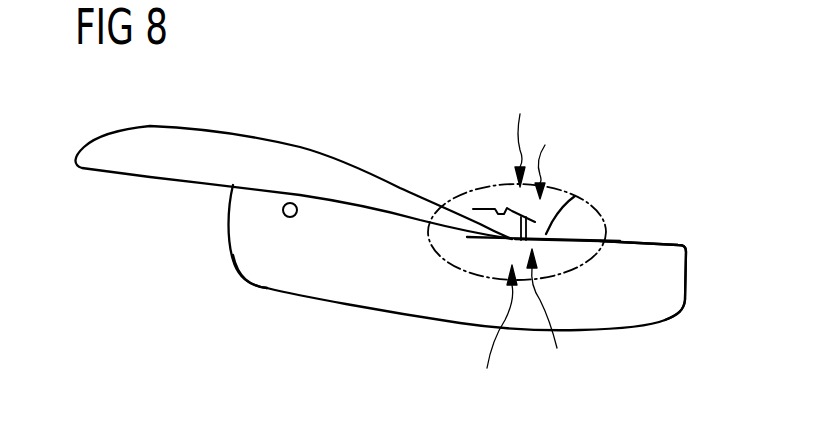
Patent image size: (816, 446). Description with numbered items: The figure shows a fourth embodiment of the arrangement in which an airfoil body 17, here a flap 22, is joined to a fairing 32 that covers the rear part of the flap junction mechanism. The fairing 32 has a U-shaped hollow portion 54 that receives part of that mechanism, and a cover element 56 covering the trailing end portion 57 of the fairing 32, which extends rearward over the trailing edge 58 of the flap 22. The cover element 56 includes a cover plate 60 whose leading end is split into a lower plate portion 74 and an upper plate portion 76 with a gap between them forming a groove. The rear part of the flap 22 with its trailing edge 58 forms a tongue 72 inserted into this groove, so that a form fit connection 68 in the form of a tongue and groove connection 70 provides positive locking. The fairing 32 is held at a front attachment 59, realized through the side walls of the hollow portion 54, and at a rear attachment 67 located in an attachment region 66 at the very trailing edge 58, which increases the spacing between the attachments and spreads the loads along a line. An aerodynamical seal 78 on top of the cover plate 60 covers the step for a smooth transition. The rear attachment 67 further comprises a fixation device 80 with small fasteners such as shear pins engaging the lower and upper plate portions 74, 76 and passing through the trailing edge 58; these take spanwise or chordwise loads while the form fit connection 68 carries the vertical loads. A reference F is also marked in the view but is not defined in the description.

The airfoil body 17 is at (293, 150).
The flap 22 is at (208, 128).
The fairing 32 is at (378, 297).
The hollow portion 54 is at (266, 276).
The cover element 56 is at (669, 195).
The cover plate 60 is at (667, 243).
The trailing end portion 57 is at (686, 262).
The trailing edge 58 is at (608, 204).
The tongue 72 is at (575, 196).
The front attachment 59 is at (263, 211).
The attachment region 66 is at (520, 134).
The rear attachment 67 is at (549, 155).
The form fit connection 68 is at (488, 336).
The tongue and groove connection 70 is at (488, 336).
The lower plate portion 74 is at (471, 251).
The upper plate portion 76 is at (528, 216).
The aerodynamical seal 78 is at (482, 208).
The fixation device 80 is at (548, 315).
The force F is at (590, 271).